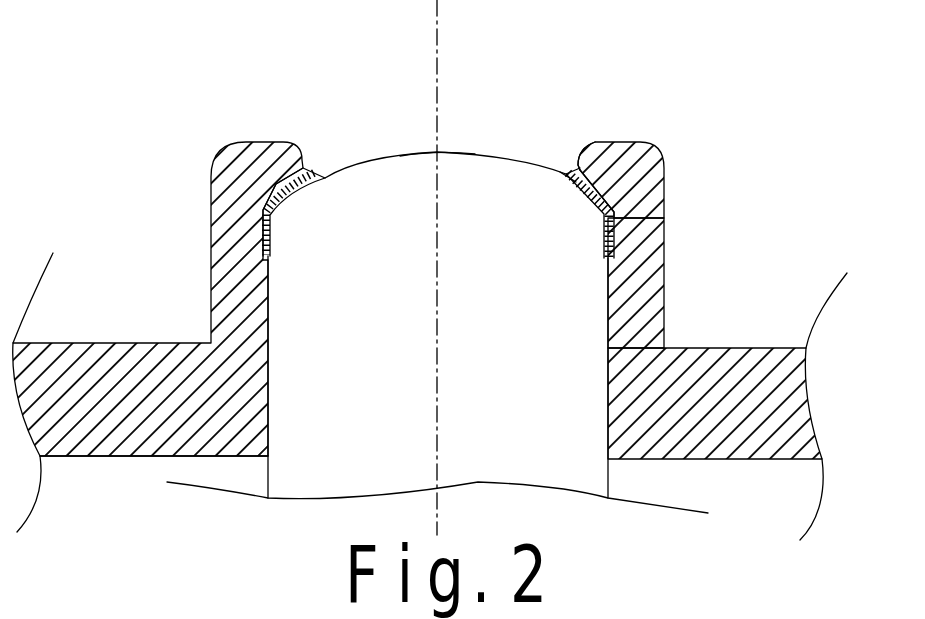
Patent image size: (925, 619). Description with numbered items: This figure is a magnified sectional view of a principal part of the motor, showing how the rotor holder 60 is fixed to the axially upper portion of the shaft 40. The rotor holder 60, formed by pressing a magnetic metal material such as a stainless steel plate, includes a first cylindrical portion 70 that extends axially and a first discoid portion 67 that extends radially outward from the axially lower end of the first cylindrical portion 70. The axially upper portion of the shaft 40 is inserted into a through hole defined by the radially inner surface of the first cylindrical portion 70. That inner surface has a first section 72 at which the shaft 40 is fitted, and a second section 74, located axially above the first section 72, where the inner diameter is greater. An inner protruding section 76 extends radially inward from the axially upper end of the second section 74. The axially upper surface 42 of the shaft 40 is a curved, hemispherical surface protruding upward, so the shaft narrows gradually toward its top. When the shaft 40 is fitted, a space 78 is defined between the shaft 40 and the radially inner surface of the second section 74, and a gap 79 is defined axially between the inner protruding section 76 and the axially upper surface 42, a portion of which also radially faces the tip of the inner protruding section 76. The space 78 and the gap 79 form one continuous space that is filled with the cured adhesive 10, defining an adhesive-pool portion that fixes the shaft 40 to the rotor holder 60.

The cured adhesive 10 is at (303, 165).
The shaft 40 is at (322, 237).
The axially upper surface 42 is at (437, 152).
The rotor holder 60 is at (160, 313).
The first discoid portion 67 is at (94, 382).
The first cylindrical portion 70 is at (645, 266).
The first section 72 is at (664, 348).
The second section 74 is at (657, 155).
The inner protruding section 76 is at (596, 142).
The space 78 is at (635, 220).
The gap 79 is at (567, 174).